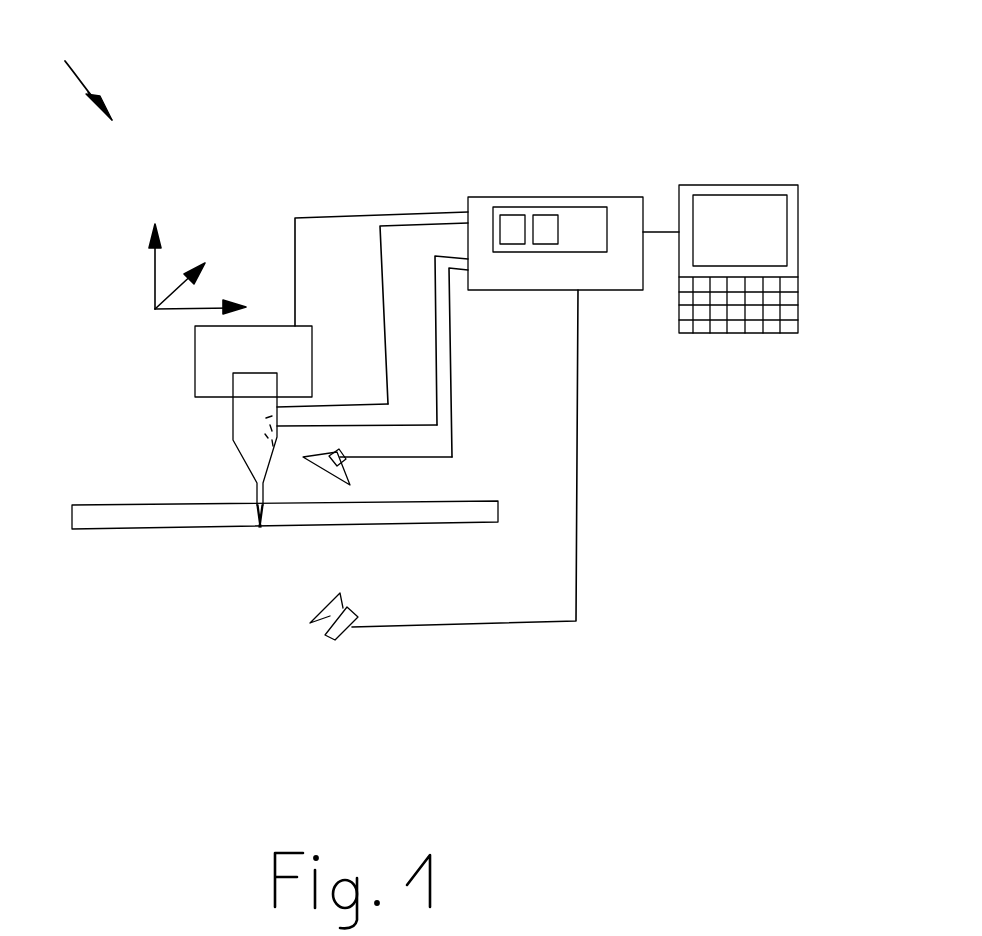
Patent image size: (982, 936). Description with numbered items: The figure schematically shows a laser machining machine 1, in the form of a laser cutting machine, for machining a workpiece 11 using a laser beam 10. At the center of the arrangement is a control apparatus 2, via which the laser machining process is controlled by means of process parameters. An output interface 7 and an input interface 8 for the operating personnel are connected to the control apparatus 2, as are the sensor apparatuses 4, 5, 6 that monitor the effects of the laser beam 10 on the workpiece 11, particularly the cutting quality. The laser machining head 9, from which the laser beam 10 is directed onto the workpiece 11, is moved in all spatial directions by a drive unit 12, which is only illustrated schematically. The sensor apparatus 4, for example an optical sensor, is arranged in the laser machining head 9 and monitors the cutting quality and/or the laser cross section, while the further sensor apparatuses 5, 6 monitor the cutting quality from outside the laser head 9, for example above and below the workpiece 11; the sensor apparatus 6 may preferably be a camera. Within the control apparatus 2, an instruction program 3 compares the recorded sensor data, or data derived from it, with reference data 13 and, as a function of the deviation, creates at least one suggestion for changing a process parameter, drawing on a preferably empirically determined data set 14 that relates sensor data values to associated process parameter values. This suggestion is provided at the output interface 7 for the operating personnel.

The laser machining machine 1 is at (51, 55).
The control apparatus 2 is at (631, 197).
The instruction program 3 is at (572, 207).
The sensor apparatus 4 is at (275, 442).
The sensor apparatus 5 is at (348, 470).
The sensor apparatus 6 is at (322, 636).
The output interface 7 is at (799, 222).
The input interface 8 is at (799, 307).
The laser machining head 9 is at (233, 428).
The laser beam 10 is at (254, 492).
The workpiece 11 is at (102, 530).
The drive unit 12 is at (195, 357).
The reference data 13 is at (510, 215).
The data set 14 is at (545, 215).